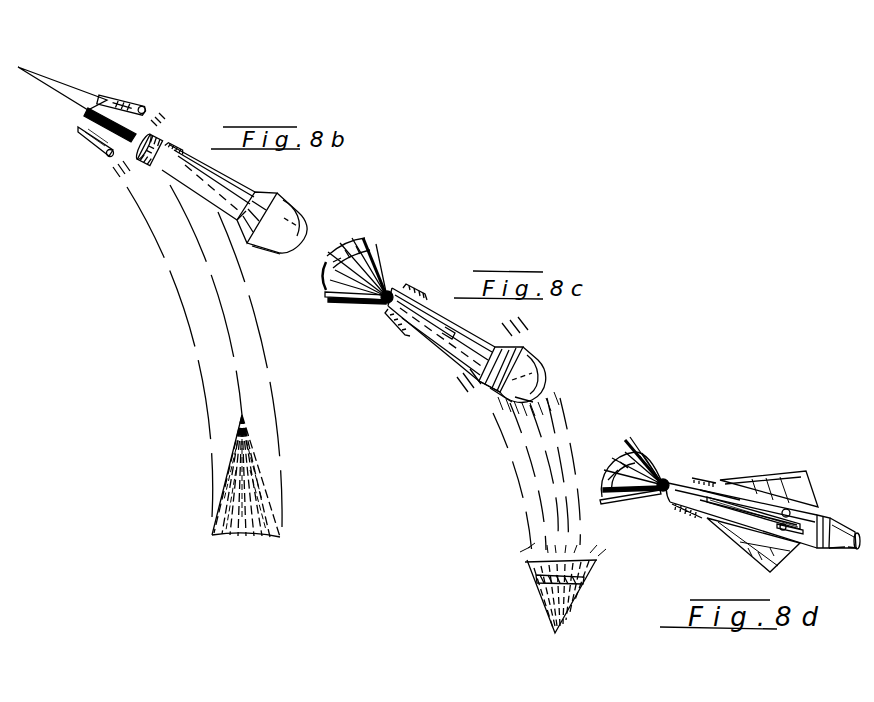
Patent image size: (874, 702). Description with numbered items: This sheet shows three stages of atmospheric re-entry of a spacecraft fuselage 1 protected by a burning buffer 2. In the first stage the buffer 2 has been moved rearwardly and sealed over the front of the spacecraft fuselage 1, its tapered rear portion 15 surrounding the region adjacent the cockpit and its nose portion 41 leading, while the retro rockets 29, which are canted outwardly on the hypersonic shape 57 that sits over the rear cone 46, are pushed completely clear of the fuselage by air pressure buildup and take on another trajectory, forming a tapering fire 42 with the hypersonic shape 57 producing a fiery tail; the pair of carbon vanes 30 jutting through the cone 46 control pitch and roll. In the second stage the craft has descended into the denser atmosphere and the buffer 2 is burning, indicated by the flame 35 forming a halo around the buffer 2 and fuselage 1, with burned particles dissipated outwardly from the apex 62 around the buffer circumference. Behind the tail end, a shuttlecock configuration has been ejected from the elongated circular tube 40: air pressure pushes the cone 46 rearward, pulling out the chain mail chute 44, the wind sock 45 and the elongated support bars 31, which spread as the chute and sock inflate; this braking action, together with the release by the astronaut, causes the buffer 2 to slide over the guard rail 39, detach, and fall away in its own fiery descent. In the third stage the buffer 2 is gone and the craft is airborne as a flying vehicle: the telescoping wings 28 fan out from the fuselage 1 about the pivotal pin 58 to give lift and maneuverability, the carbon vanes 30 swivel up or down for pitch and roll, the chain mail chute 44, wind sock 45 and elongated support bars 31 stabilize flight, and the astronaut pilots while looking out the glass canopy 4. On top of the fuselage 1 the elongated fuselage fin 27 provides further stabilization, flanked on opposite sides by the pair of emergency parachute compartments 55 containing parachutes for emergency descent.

In FIG. 8B, the spacecraft fuselage 1 is at (248, 188).
In FIG. 8C, the spacecraft fuselage 1 is at (433, 353).
In FIG. 8D, the spacecraft fuselage 1 is at (819, 510).
In FIG. 8B, the buffer 2 is at (301, 205).
In FIG. 8C, the buffer 2 is at (541, 361).
In FIG. 8D, the glass canopy 4 is at (841, 528).
In FIG. 8B, the tapered rear portion 15 is at (238, 222).
In FIG. 8C, the tapered rear portion 15 is at (499, 347).
In FIG. 8D, the elongated fuselage fin 27 is at (737, 499).
In FIG. 8D, the telescoping wings 28 is at (790, 477).
In FIG. 8B, the retro rockets 29 is at (132, 98).
In FIG. 8B, the carbon vanes 30 is at (174, 144).
In FIG. 8C, the carbon vanes 30 is at (418, 298).
In FIG. 8D, the carbon vanes 30 is at (699, 478).
In FIG. 8C, the elongated support bars 31 is at (374, 258).
In FIG. 8D, the elongated support bars 31 is at (640, 453).
In FIG. 8C, the flame 35 is at (466, 389).
In FIG. 8D, the guard rail 39 is at (824, 548).
In FIG. 8C, the elongated circular tube 40 is at (386, 318).
In FIG. 8B, the nose portion 41 is at (278, 249).
In FIG. 8C, the nose portion 41 is at (543, 384).
In FIG. 8D, the nose portion 41 is at (857, 550).
In FIG. 8B, the tapering fire 42 is at (270, 507).
In FIG. 8C, the chain mail chute 44 is at (362, 243).
In FIG. 8D, the chain mail chute 44 is at (617, 456).
In FIG. 8C, the wind sock 45 is at (380, 282).
In FIG. 8D, the wind sock 45 is at (656, 463).
In FIG. 8B, the cone 46 is at (141, 157).
In FIG. 8C, the cone 46 is at (343, 262).
In FIG. 8D, the cone 46 is at (598, 463).
In FIG. 8D, the emergency parachute compartments 55 is at (789, 511).
In FIG. 8B, the hypersonic shape 57 is at (80, 85).
In FIG. 8D, the pivotal pin 58 is at (720, 480).
In FIG. 8B, the apex 62 is at (279, 193).
In FIG. 8C, the apex 62 is at (529, 347).